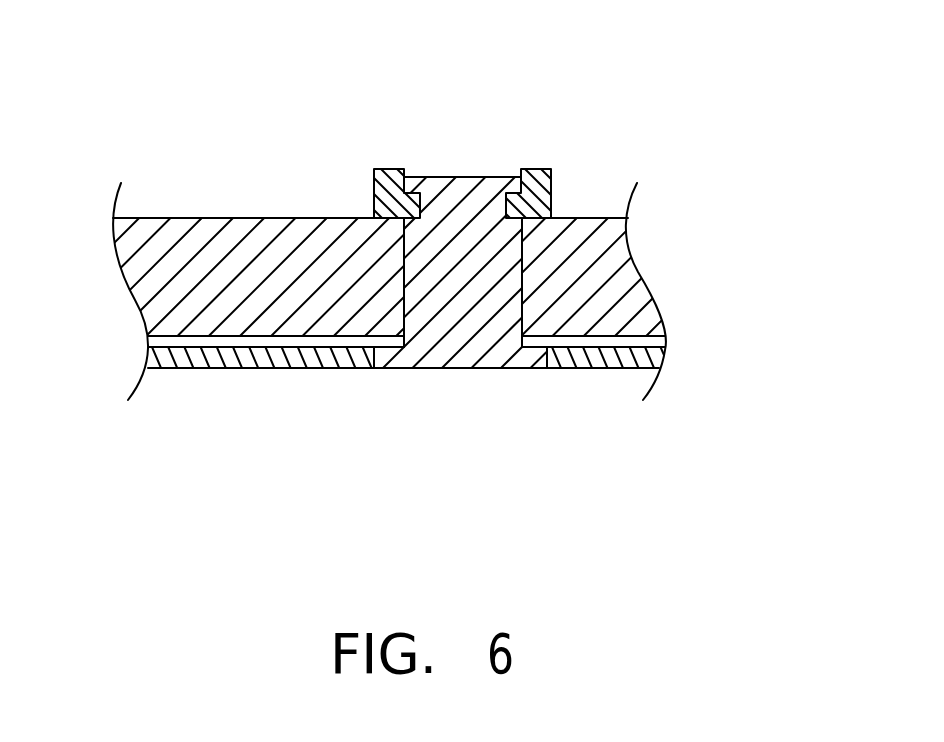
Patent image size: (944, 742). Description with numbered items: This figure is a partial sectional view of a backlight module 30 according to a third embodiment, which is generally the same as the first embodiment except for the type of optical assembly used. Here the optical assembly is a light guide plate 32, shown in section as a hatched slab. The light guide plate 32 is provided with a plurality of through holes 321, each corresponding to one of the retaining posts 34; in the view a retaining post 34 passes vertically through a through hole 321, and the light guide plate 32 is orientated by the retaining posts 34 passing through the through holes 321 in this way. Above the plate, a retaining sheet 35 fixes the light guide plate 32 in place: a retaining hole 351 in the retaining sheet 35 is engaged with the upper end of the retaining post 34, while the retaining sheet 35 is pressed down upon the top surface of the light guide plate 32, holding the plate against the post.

The backlight module 30 is at (707, 149).
The light guide plate 32 is at (153, 276).
The through holes 321 is at (412, 250).
The retaining posts 34 is at (497, 343).
The retaining sheet 35 is at (553, 203).
The retaining hole 351 is at (468, 155).